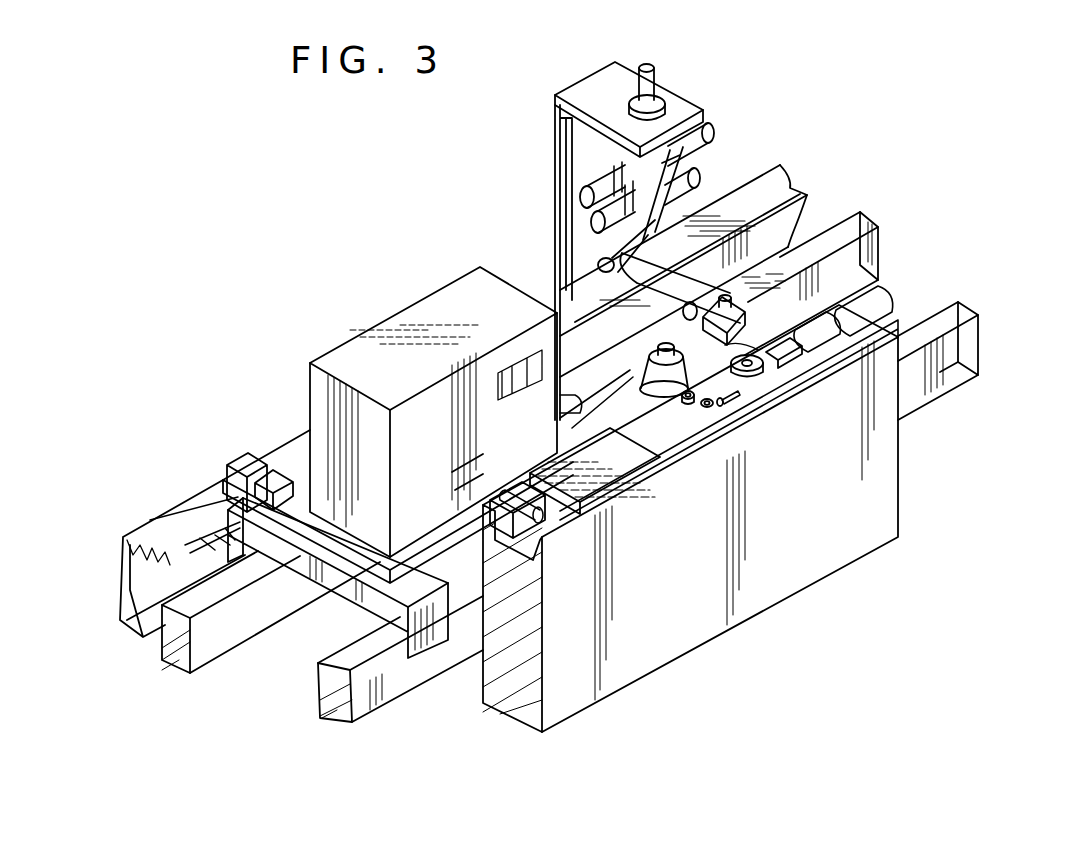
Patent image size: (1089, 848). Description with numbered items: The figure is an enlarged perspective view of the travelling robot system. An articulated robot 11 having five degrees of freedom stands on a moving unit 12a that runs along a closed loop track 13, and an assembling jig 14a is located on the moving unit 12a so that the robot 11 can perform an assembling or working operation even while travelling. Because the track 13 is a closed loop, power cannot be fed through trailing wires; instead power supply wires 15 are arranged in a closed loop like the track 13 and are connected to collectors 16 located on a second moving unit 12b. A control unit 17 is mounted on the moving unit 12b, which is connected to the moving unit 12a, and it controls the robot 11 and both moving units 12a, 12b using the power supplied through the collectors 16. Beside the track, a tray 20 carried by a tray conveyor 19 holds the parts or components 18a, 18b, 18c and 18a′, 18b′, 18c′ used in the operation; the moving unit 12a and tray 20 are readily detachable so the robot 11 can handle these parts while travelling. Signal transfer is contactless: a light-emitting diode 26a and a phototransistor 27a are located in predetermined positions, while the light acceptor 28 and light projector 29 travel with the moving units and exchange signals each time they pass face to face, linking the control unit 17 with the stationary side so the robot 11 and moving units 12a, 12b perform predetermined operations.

The robot 11 is at (612, 248).
The moving unit 12a is at (587, 360).
The moving unit 12b is at (445, 545).
The closed loop track 13 is at (870, 270).
The assembling jig 14a is at (641, 381).
The power supply wires 15 is at (140, 540).
The collectors 16 is at (232, 538).
The control unit 17 is at (383, 334).
The part or component 18a is at (686, 405).
The part or component 18a′ is at (710, 408).
The part or component 18b is at (745, 375).
The part or component 18b′ is at (773, 370).
The part or component 18c is at (760, 380).
The part or component 18c′ is at (745, 330).
The tray conveyor 19 is at (887, 447).
The tray 20 is at (787, 388).
The light-emitting diode 26a is at (183, 457).
The phototransistor 27a is at (227, 462).
The light acceptor 28 is at (255, 449).
The light projector 29 is at (280, 468).